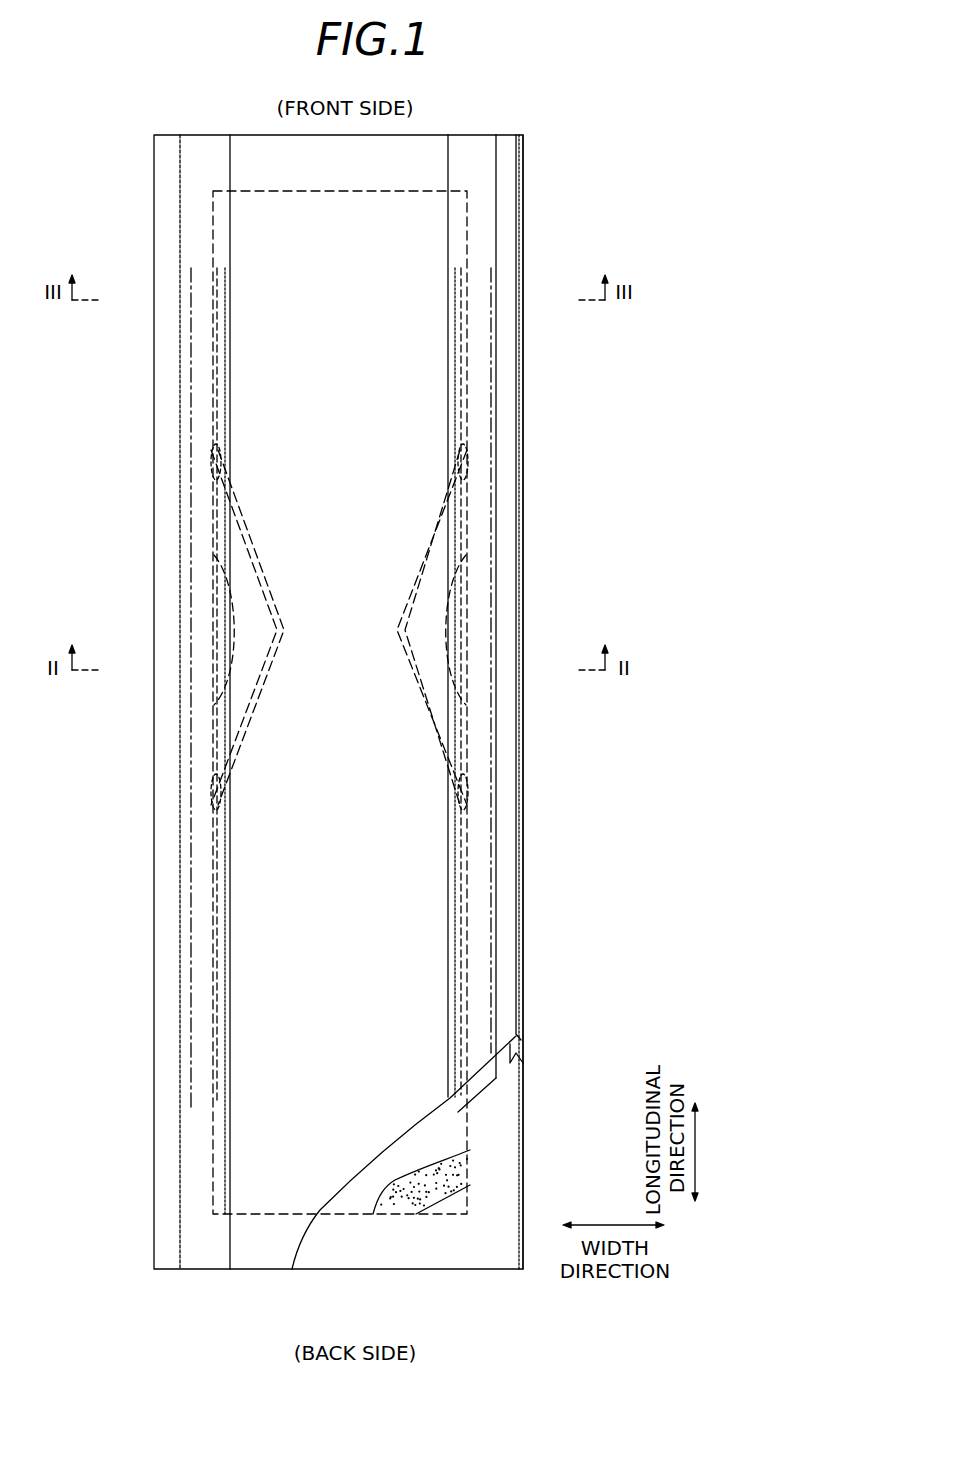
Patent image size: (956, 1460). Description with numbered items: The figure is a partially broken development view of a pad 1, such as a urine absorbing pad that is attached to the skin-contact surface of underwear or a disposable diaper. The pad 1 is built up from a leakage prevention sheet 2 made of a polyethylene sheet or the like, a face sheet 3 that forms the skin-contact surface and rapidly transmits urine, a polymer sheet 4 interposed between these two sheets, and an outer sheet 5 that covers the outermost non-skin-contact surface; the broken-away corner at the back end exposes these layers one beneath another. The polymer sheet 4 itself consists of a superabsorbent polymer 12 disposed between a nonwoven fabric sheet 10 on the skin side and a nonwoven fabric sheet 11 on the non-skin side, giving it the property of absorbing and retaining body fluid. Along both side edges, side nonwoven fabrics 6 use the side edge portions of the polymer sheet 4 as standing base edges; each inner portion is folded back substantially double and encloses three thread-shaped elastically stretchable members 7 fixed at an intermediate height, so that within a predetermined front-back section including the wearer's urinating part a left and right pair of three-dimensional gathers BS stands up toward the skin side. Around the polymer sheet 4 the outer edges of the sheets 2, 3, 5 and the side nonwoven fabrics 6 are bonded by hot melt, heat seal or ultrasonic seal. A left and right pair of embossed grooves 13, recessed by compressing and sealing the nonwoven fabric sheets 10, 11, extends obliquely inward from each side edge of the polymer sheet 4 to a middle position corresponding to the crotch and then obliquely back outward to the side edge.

The pad 1 is at (544, 219).
The leakage prevention sheet 2 is at (498, 1253).
The face sheet 3 is at (262, 1253).
The polymer sheet 4 is at (475, 1165).
The outer sheet 5 is at (519, 1040).
The side nonwoven fabric 6 is at (172, 812).
The thread-shaped elastically stretchable member 7 is at (228, 942).
The nonwoven fabric sheet 10 is at (350, 1207).
The nonwoven fabric sheet 11 is at (450, 1207).
The superabsorbent polymer 12 is at (400, 1207).
The embossed groove 13 is at (263, 568).
The three-dimensional gather BS is at (175, 585).